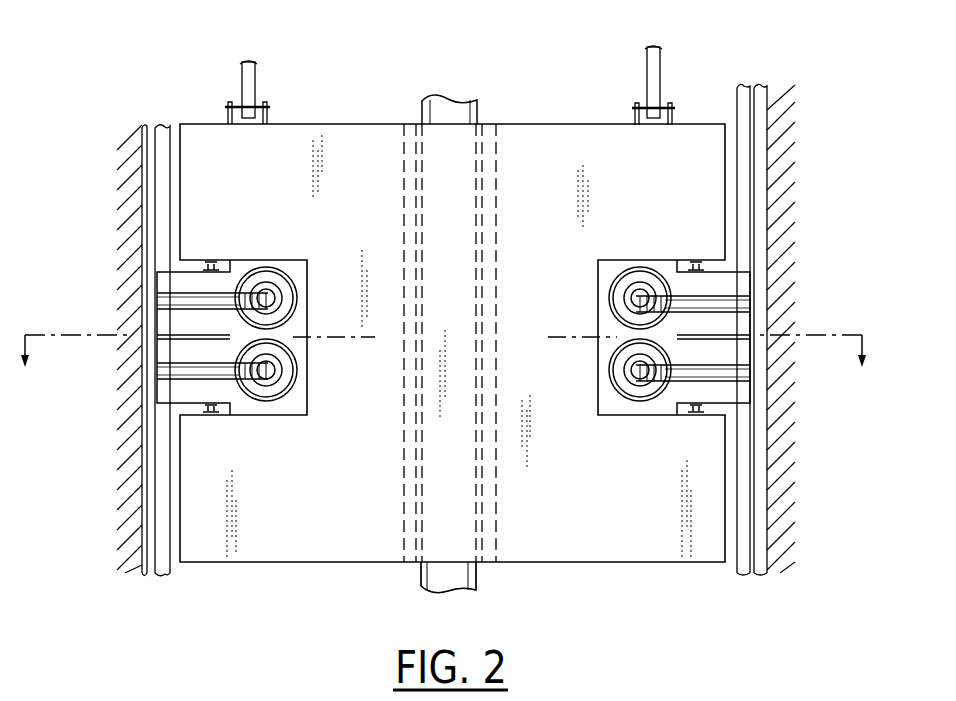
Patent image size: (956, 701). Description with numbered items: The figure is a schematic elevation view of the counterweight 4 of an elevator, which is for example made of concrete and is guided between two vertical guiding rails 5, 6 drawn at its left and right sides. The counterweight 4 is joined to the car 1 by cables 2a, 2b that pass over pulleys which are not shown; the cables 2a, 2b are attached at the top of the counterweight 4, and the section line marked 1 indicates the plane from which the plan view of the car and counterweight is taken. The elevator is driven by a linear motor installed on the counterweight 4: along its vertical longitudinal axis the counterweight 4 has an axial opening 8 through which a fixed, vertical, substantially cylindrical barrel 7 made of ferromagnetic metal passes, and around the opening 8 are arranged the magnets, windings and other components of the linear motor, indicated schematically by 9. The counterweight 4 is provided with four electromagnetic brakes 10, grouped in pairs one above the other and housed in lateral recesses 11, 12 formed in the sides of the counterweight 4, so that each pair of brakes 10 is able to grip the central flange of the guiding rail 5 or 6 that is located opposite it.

The car 1 is at (443, 332).
The cable 2a is at (258, 79).
The cable 2b is at (648, 63).
The counterweight 4 is at (318, 563).
The guiding rail 5 is at (150, 575).
The guiding rail 6 is at (752, 567).
The barrel 7 is at (470, 566).
The axial opening 8 is at (421, 124).
The linear motor components 9 is at (493, 158).
The electromagnetic brakes 10 is at (273, 256).
The lateral recess 11 is at (293, 405).
The lateral recess 12 is at (613, 405).